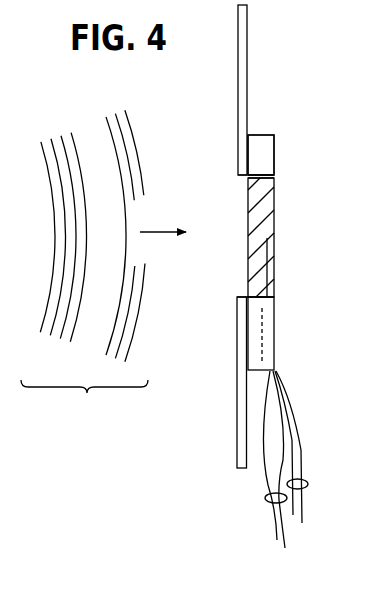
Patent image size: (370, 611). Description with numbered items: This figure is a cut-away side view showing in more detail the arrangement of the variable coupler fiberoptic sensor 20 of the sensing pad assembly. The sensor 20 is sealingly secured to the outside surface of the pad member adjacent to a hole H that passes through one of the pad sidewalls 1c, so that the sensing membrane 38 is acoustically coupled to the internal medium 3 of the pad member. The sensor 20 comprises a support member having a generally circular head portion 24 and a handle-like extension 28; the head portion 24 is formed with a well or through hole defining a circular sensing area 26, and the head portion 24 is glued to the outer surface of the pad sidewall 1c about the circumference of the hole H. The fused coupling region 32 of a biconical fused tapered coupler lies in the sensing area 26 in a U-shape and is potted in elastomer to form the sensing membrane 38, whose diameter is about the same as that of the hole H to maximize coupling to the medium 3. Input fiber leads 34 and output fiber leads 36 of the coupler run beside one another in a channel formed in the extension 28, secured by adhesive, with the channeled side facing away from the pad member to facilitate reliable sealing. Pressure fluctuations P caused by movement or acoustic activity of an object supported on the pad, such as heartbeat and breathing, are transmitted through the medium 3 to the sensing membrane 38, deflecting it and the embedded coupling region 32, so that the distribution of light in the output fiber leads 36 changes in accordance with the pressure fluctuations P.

The pad sidewall 1c is at (245, 78).
The internal medium 3 is at (158, 91).
The pressure fluctuations P is at (97, 131).
The variable coupler fiberoptic sensor 20 is at (284, 117).
The head portion 24 is at (270, 162).
The sensing area 26 is at (267, 178).
The sensing membrane 38 is at (272, 225).
The fused coupling region 32 is at (268, 250).
The handle-like extension 28 is at (257, 335).
The input fiber leads 34 is at (305, 480).
The output fiber leads 36 is at (267, 499).
The hole H is at (240, 177).